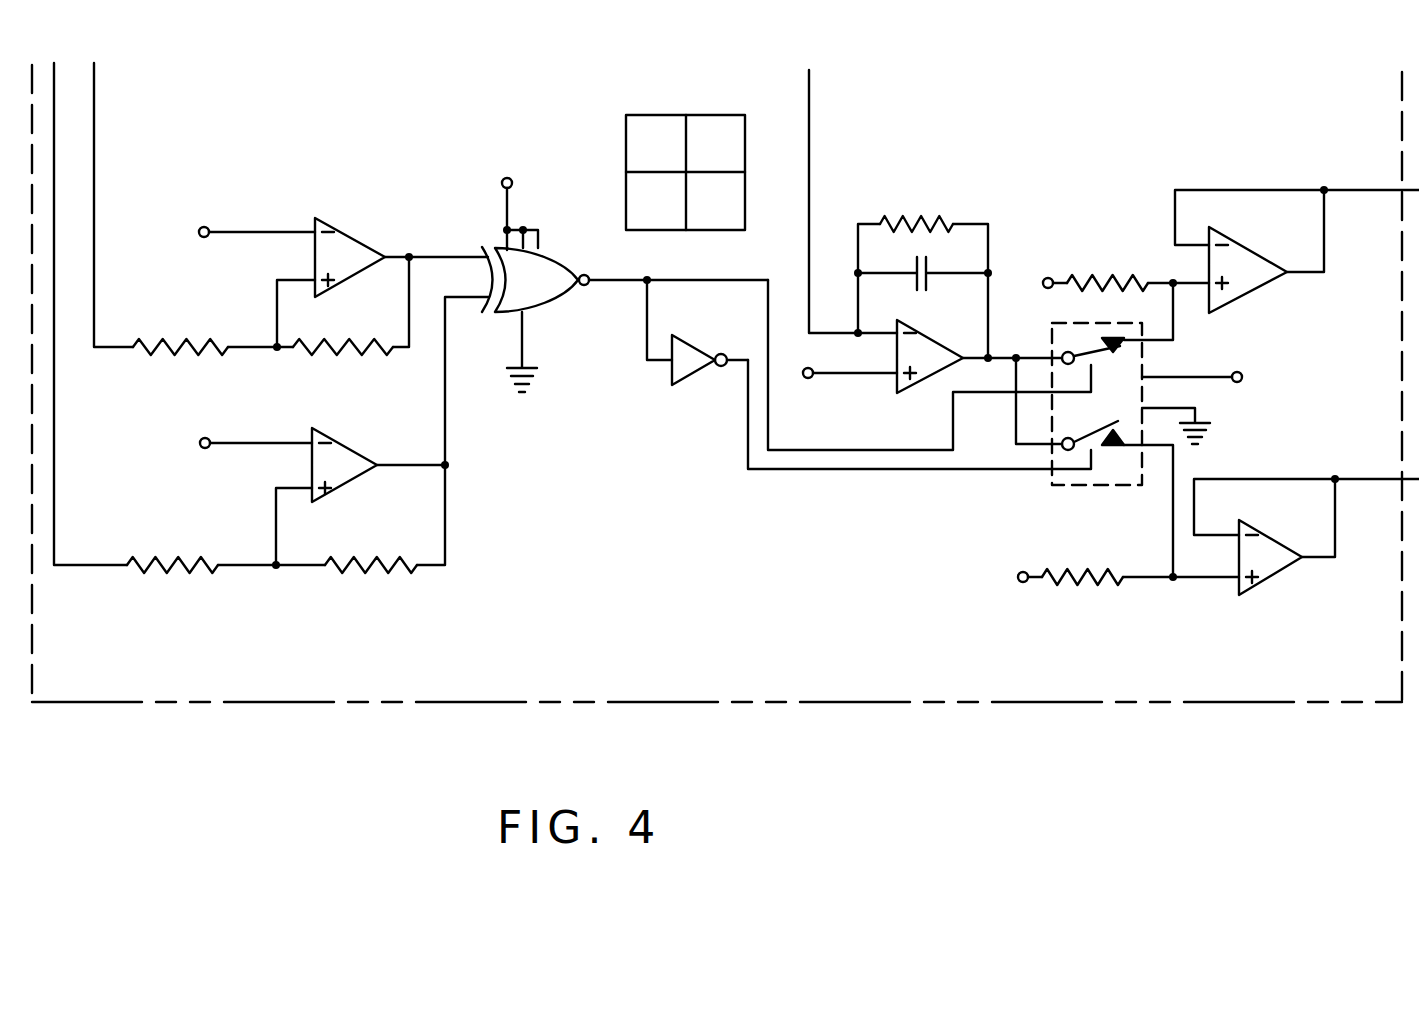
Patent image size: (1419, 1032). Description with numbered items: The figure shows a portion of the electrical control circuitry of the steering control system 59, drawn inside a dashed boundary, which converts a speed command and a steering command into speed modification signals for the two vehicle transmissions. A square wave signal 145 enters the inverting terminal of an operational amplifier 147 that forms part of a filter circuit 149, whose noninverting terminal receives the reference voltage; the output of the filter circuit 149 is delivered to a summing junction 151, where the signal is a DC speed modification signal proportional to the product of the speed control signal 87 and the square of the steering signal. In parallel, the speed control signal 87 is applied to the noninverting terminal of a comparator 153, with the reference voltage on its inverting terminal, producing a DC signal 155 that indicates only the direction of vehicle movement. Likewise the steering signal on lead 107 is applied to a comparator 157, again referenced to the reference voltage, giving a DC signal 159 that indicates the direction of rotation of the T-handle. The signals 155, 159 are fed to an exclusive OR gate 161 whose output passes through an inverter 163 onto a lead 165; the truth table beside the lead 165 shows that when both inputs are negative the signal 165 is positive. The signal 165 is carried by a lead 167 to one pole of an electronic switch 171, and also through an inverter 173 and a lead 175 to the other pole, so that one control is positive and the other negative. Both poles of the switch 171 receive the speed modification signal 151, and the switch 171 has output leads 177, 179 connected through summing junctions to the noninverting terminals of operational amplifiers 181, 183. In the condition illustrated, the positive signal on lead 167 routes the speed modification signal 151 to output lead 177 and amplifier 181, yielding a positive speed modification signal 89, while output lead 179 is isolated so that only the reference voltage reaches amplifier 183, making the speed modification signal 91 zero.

The steering control system 59 is at (958, 705).
The speed control signal 87 is at (56, 98).
The steering signal lead 107 is at (94, 133).
The comparator 157 is at (355, 240).
The comparator 153 is at (353, 451).
The DC signal 159 is at (435, 257).
The DC signal 155 is at (447, 432).
The exclusive OR gate 161 is at (543, 313).
The inverter 163 is at (586, 288).
The lead 165 is at (650, 230).
The inverter 173 is at (712, 372).
The lead 167 is at (881, 450).
The lead 175 is at (880, 470).
The square wave signal 145 is at (809, 102).
The filter circuit 149 is at (906, 215).
The operational amplifier 147 is at (926, 336).
The summing junction 151 is at (1016, 352).
The electronic switch 171 is at (1085, 487).
The output lead 177 is at (1160, 345).
The output lead 179 is at (1170, 528).
The operational amplifier 181 is at (1250, 251).
The operational amplifier 183 is at (1265, 536).
The speed modification signal 89 is at (1372, 190).
The speed modification signal 91 is at (1366, 479).